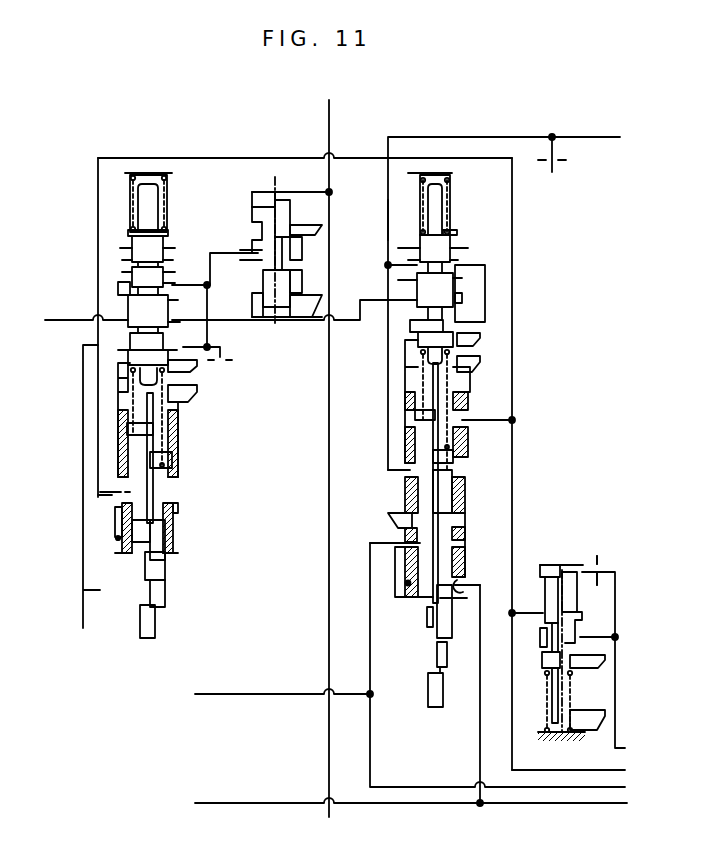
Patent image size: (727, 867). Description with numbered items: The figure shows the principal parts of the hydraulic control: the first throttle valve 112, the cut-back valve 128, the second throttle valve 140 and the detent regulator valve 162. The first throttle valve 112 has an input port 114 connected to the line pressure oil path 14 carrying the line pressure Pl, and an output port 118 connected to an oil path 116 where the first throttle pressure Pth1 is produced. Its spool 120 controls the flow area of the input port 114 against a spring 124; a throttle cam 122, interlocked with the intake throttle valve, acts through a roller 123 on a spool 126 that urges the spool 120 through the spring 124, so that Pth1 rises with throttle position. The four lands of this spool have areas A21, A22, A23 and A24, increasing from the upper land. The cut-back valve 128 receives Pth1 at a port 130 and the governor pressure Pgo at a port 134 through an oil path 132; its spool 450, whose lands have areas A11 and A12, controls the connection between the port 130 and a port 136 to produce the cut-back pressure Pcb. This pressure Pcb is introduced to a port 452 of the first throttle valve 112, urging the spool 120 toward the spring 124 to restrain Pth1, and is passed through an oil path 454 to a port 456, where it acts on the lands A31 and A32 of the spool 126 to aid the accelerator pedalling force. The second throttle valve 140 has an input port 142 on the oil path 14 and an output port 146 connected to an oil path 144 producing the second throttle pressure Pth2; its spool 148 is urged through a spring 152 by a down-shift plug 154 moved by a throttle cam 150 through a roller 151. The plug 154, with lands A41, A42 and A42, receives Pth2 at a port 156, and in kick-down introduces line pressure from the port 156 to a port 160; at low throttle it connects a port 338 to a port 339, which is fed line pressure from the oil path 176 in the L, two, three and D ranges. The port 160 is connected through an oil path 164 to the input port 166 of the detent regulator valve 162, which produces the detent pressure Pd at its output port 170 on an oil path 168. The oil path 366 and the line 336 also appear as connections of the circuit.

The governor pressure Pgo is at (329, 433).
The oil path 132 is at (333, 385).
The oil path 176 is at (405, 805).
The passage 336 is at (246, 696).
The oil path 366 is at (620, 788).
The detent regulator valve 162 is at (508, 453).
The oil path 164 is at (513, 489).
The second throttle pressure Pth2 is at (552, 172).
The drive pressure Pd is at (617, 703).
The line pressure oil path 14 is at (76, 318).
The line pressure Pl is at (67, 321).
The oil path 454 is at (98, 449).
The first throttle pressure Pth1 is at (82, 496).
The port 456 is at (110, 492).
The oil path 116 is at (213, 310).
The cross-sectional area of land A21 is at (147, 236).
The cut-back pressure Pcb is at (169, 203).
The port 452 is at (133, 257).
The cross-sectional area of land A22 is at (136, 276).
The input port 114 is at (130, 310).
The cross-sectional area of land A23 is at (127, 324).
The output port 118 is at (117, 351).
The cross-sectional area of land A24 is at (120, 367).
The spool 120 is at (178, 377).
The first throttle valve 112 is at (184, 489).
The spring 124 is at (180, 425).
The cross-sectional area of land A31 is at (162, 467).
The spool 126 is at (160, 538).
The cross-sectional area of land A32 is at (162, 527).
The roller 123 is at (152, 593).
The throttle cam 122 is at (157, 625).
The cut-back valve 128 is at (268, 190).
The spool 450 is at (256, 186).
The port 134 is at (307, 190).
The cross-sectional area of land A11 is at (273, 228).
The port 136 is at (257, 258).
The port 130 is at (258, 277).
The cross-sectional area of land A12 is at (287, 292).
The second throttle valve 140 is at (458, 226).
The spool 148 is at (428, 247).
The input port 142 is at (407, 305).
The oil path 144 is at (390, 200).
The output port 146 is at (462, 327).
The spring 152 is at (450, 380).
The port 156 is at (407, 467).
The port 160 is at (475, 425).
The cross-sectional area of land A41 is at (450, 457).
The down-shift plug 154 is at (430, 515).
The port 338 is at (400, 516).
The cross-sectional area of land A42 is at (452, 505).
The port 339 is at (470, 585).
The roller 151 is at (437, 656).
The throttle cam 150 is at (437, 700).
The input port 166 is at (542, 612).
The output port 170 is at (582, 637).
The oil path 168 is at (617, 671).